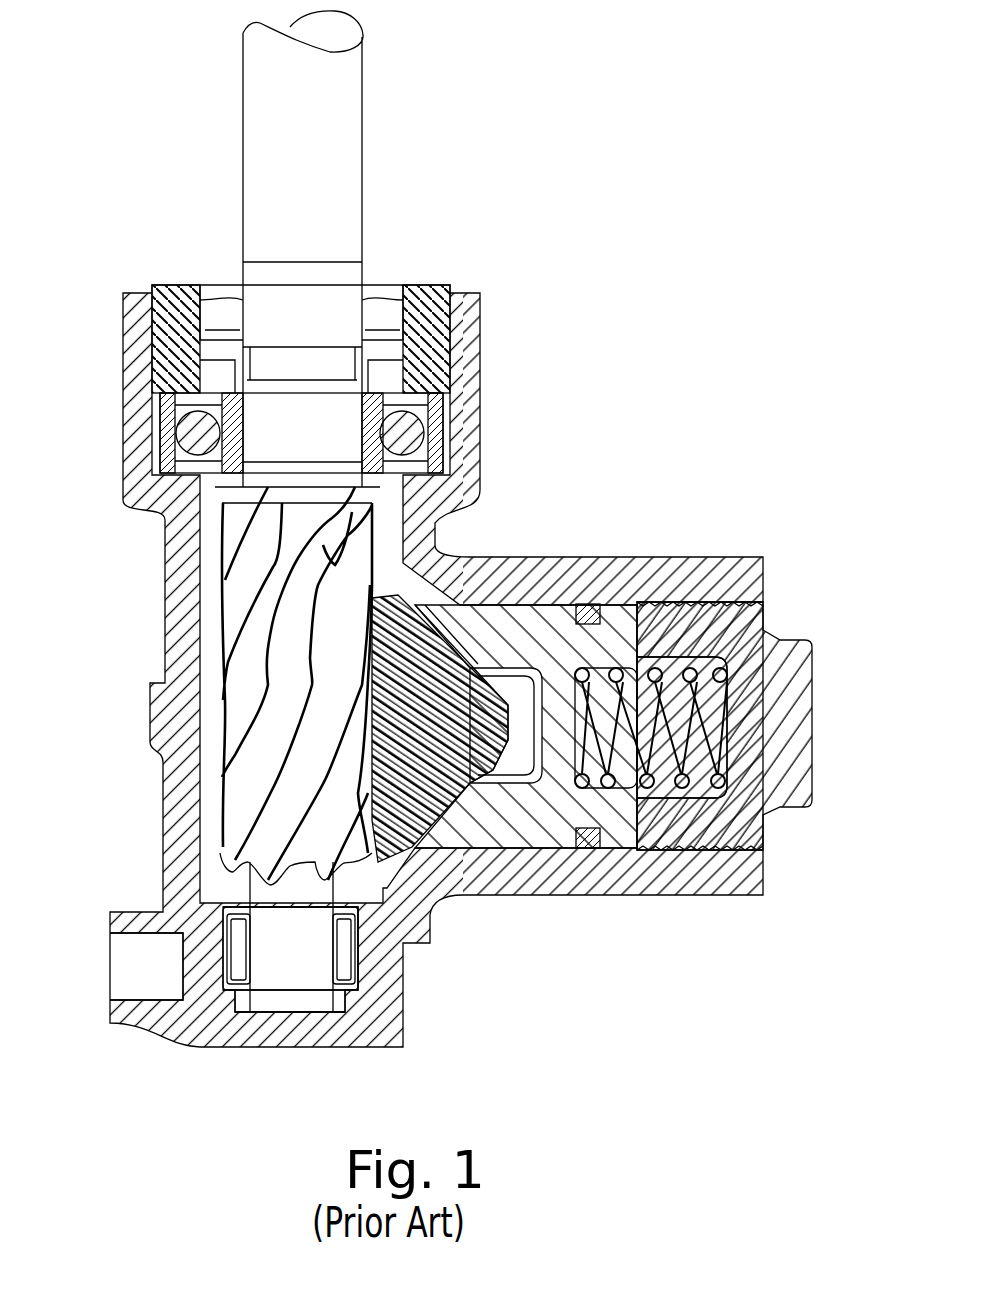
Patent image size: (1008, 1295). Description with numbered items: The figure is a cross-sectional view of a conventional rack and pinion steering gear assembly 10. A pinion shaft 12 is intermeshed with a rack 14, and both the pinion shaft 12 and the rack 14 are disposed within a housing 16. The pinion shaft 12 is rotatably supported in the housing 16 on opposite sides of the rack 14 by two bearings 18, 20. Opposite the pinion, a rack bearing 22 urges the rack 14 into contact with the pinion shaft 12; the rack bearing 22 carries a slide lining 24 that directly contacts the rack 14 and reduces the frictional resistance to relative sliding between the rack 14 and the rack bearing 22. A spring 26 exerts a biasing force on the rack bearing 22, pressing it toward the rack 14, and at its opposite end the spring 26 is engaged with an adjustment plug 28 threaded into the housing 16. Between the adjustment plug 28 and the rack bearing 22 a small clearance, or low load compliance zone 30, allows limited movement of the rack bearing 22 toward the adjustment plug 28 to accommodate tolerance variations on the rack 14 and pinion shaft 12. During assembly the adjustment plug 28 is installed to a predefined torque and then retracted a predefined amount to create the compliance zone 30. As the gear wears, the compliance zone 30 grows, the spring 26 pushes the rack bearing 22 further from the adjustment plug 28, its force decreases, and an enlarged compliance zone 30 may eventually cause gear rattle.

The rack and pinion steering gear assembly 10 is at (80, 140).
The pinion shaft 12 is at (240, 615).
The rack 14 is at (385, 855).
The housing 16 is at (445, 553).
The bearing 18 is at (160, 403).
The bearing 20 is at (237, 942).
The rack bearing 22 is at (543, 838).
The slide lining 24 is at (503, 790).
The spring 26 is at (673, 733).
The adjustment plug 28 is at (782, 788).
The compliance zone 30 is at (640, 602).